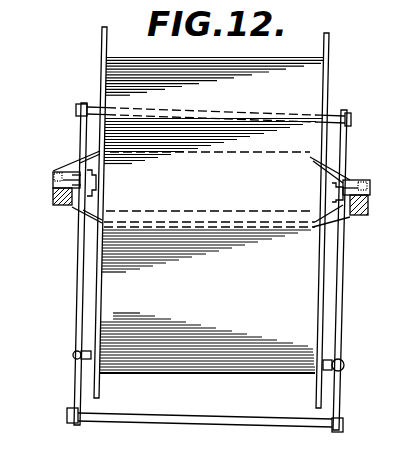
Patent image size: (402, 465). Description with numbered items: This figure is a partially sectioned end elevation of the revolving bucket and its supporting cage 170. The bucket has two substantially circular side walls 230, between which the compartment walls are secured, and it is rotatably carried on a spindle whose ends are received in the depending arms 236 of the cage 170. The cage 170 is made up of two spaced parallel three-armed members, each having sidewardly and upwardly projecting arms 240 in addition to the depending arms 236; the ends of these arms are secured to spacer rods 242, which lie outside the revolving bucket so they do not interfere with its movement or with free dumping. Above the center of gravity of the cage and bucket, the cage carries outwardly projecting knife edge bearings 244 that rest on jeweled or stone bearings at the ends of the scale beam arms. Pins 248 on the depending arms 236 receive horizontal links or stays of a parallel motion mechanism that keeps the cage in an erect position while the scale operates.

The cage 170 is at (350, 98).
The circular side wall 230 is at (330, 27).
The depending arm 236 is at (78, 302).
The upwardly projecting arm 240 is at (348, 141).
The spacer rod 242 is at (348, 116).
The knife edge bearing 244 is at (62, 170).
The pin 248 is at (339, 369).